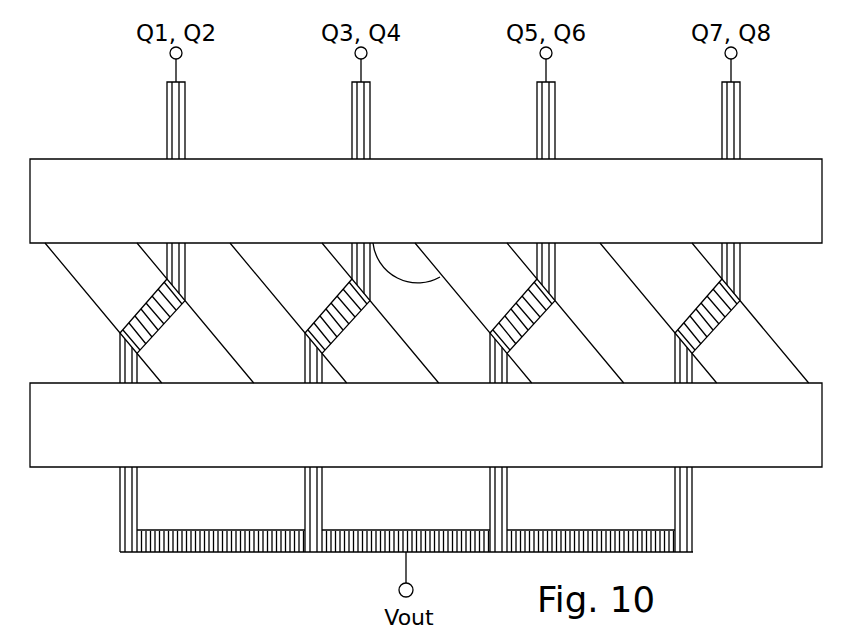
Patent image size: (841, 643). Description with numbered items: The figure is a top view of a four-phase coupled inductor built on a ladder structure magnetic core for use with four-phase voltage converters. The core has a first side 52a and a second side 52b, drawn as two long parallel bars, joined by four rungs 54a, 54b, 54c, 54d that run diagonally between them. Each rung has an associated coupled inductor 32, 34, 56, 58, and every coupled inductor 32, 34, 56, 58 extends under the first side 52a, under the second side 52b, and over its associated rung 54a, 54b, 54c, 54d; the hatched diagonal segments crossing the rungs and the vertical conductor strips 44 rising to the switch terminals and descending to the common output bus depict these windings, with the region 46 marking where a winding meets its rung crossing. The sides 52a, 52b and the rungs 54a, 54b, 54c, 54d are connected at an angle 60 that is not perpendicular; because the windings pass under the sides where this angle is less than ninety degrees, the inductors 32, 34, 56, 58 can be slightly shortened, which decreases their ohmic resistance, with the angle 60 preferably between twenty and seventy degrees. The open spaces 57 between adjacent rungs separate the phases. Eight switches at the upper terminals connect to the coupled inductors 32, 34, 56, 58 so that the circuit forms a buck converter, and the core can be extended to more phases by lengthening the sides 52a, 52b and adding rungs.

The coupled inductor 32 is at (163, 318).
The coupled inductor 34 is at (352, 318).
The conductive via strip 44 is at (167, 136).
The contact region 46 is at (132, 319).
The first side 52a is at (426, 201).
The second side 52b is at (426, 425).
The rung 54a is at (149, 313).
The rung 54b is at (334, 313).
The rung 54c is at (519, 313).
The rung 54d is at (704, 313).
The coupled inductor 56 is at (533, 316).
The gap between winding segments 57 is at (428, 329).
The coupled inductor 58 is at (722, 315).
The angle 60 is at (403, 283).